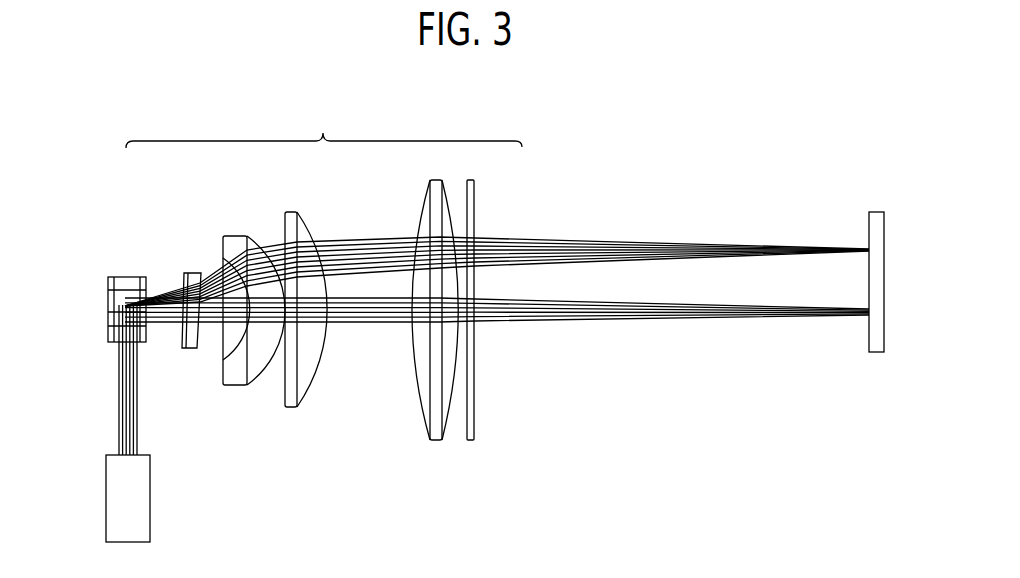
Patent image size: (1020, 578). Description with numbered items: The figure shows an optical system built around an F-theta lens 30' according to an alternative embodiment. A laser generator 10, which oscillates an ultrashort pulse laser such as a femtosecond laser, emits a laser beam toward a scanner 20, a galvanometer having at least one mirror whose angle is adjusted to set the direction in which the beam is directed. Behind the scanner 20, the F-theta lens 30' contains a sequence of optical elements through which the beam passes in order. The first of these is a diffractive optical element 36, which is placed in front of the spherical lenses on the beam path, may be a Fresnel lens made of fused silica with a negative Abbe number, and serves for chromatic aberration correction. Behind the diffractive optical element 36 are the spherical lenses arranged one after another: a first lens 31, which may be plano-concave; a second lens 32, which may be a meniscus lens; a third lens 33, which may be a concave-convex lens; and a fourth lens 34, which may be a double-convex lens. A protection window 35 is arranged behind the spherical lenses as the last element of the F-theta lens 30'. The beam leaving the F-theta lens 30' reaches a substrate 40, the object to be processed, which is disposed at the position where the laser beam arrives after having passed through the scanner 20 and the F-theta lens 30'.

The laser generator 10 is at (106, 485).
The scanner 20 is at (118, 277).
The F-theta lens 30' is at (324, 127).
The first lens 31 is at (192, 270).
The second lens 32 is at (237, 250).
The third lens 33 is at (306, 225).
The fourth lens 34 is at (424, 212).
The protection window 35 is at (476, 190).
The diffractive optical element 36 is at (176, 280).
The substrate 40 is at (884, 212).